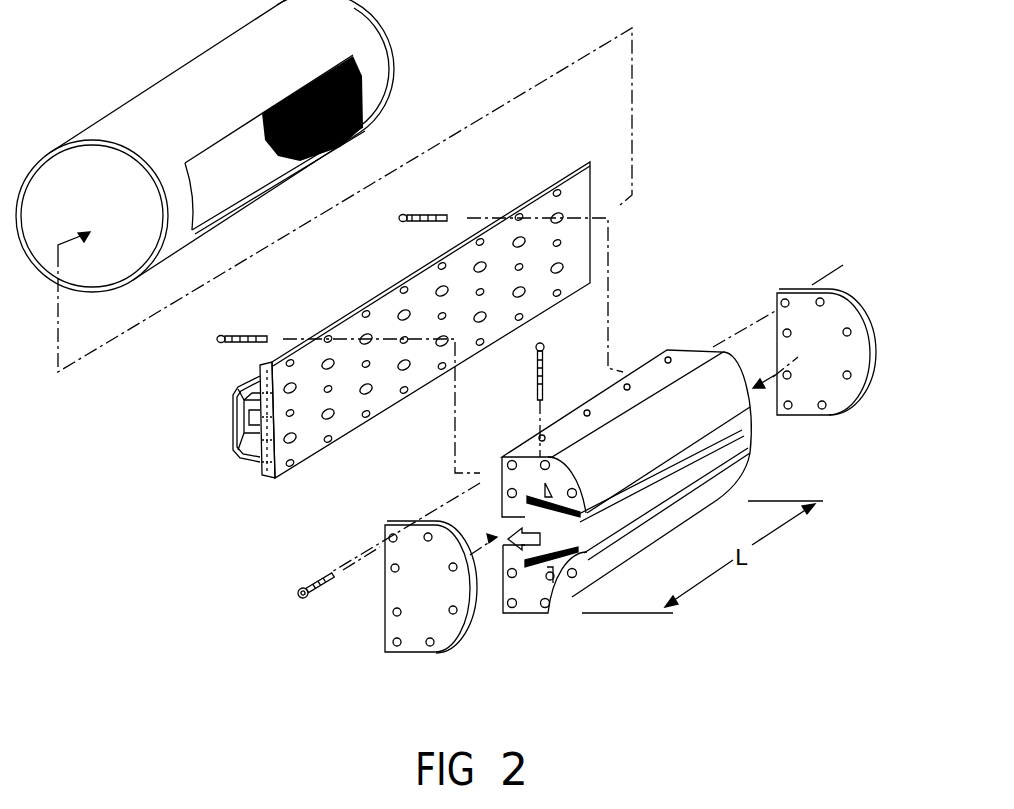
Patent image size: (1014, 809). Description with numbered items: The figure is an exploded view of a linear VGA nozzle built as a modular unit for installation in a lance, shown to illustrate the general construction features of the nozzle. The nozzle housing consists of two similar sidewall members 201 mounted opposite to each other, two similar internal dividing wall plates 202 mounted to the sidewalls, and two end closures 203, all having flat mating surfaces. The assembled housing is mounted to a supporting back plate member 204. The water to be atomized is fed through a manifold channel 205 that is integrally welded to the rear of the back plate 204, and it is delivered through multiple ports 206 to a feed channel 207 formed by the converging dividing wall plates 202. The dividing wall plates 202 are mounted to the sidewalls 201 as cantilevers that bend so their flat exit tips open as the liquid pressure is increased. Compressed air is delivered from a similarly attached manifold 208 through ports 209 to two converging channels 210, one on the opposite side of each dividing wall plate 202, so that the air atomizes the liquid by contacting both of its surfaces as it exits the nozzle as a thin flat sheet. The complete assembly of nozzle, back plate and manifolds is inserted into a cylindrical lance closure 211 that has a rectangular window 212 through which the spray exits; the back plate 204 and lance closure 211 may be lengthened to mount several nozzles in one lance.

The sidewall member 201 is at (522, 593).
The dividing wall plate 202 is at (690, 457).
The end closure 203 is at (413, 650).
The back plate member 204 is at (333, 447).
The manifold channel 205 is at (243, 428).
The port 206 is at (560, 248).
The feed channel 207 is at (550, 525).
The manifold 208 is at (248, 398).
The port 209 is at (293, 442).
The converging channel 210 is at (558, 580).
The cylindrical lance closure 211 is at (197, 60).
The rectangular window 212 is at (247, 200).